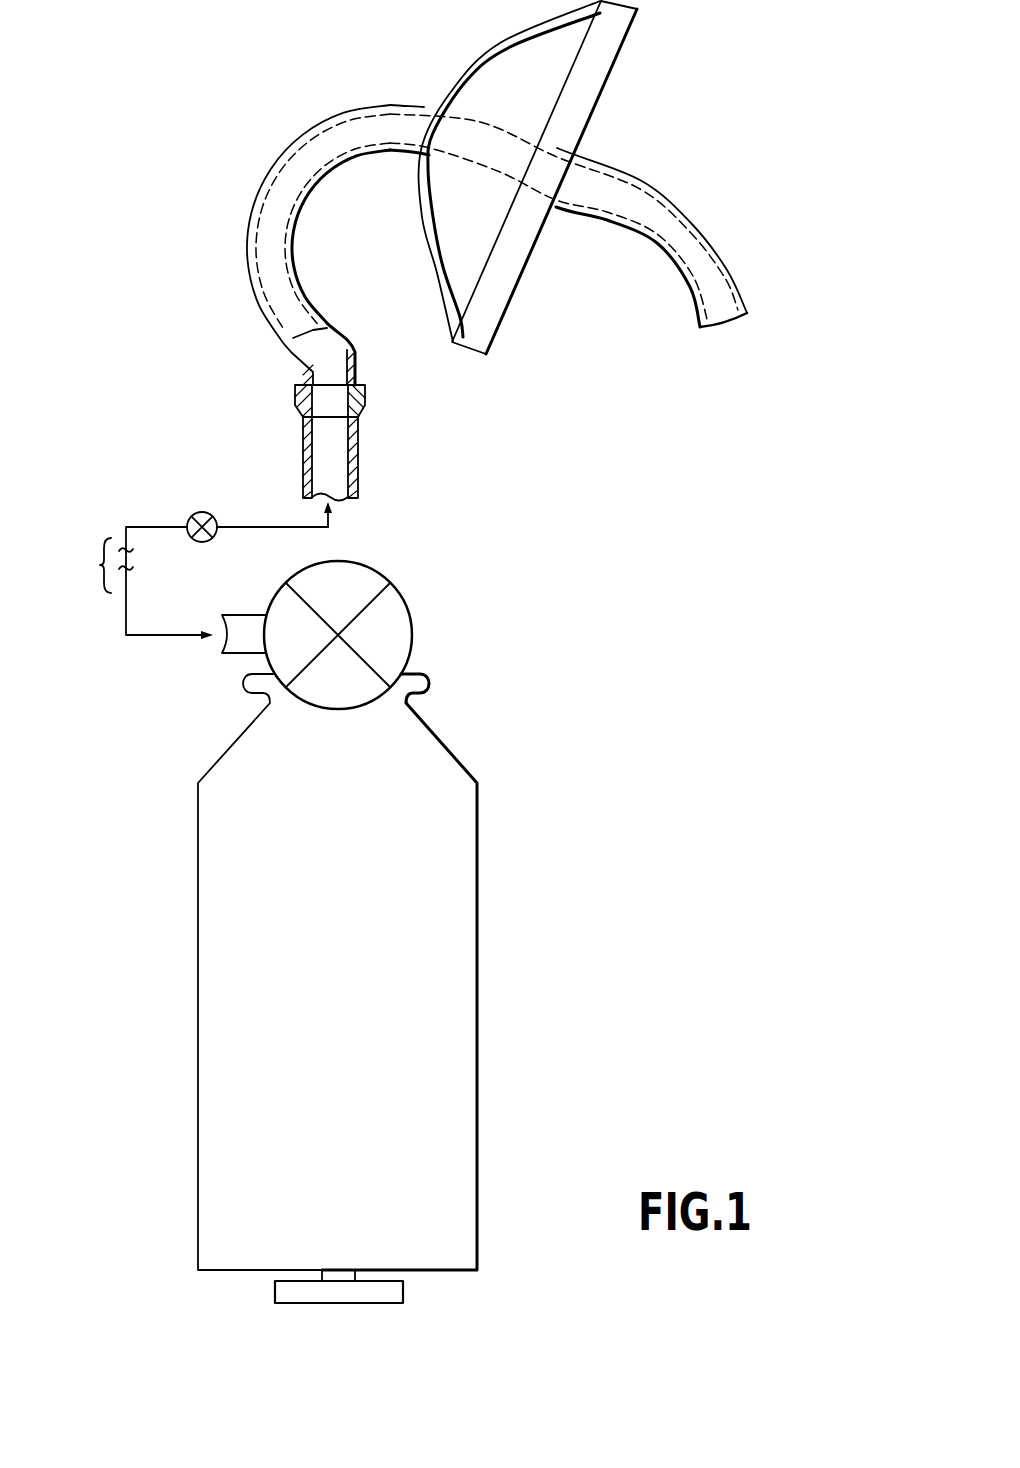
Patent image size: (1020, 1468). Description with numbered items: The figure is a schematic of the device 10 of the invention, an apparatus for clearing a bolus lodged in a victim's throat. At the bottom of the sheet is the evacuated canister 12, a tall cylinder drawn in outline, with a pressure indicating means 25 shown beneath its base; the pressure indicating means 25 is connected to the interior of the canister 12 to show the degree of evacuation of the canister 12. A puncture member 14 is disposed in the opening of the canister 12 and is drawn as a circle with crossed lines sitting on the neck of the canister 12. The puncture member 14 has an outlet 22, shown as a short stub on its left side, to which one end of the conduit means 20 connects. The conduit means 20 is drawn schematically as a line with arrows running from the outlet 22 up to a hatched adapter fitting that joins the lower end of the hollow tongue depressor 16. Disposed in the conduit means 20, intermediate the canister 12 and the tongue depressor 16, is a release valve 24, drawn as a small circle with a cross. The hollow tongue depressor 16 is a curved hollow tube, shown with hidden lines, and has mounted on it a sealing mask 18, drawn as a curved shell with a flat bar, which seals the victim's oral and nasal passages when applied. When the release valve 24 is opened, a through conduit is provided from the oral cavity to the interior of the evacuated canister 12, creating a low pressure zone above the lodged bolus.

The device 10 is at (508, 625).
The evacuated canister 12 is at (473, 990).
The puncture member 14 is at (393, 612).
The hollow tongue depressor 16 is at (648, 218).
The sealing mask 18 is at (577, 117).
The conduit means 20 is at (358, 477).
The outlet 22 is at (233, 615).
The release valve 24 is at (192, 516).
The pressure indicating means 25 is at (403, 1295).